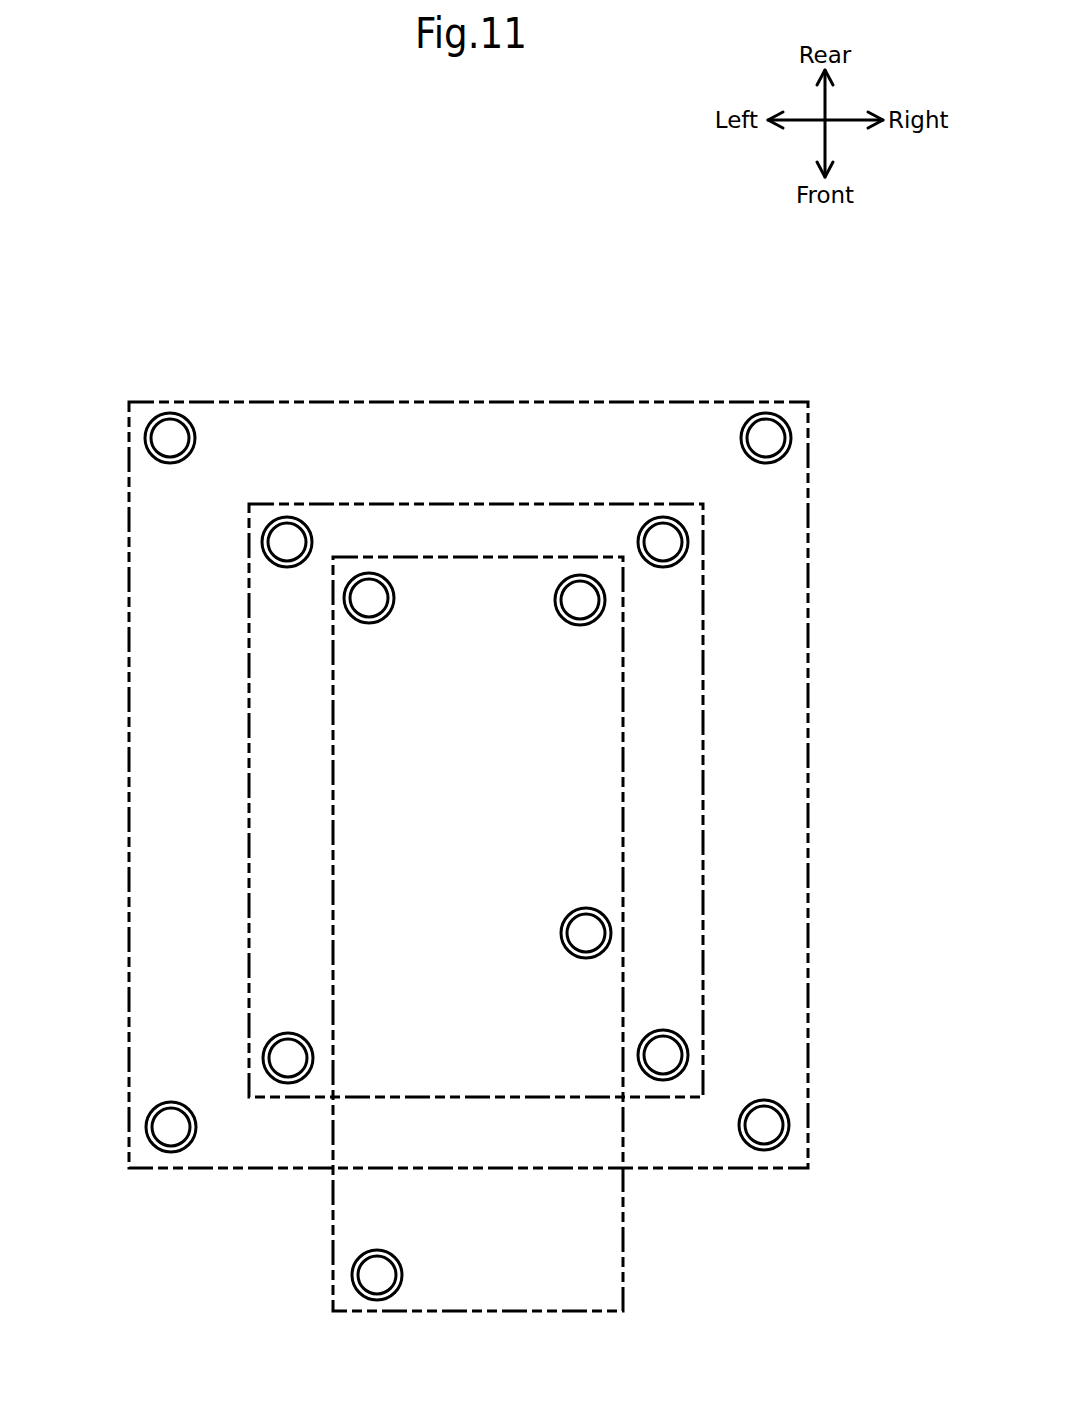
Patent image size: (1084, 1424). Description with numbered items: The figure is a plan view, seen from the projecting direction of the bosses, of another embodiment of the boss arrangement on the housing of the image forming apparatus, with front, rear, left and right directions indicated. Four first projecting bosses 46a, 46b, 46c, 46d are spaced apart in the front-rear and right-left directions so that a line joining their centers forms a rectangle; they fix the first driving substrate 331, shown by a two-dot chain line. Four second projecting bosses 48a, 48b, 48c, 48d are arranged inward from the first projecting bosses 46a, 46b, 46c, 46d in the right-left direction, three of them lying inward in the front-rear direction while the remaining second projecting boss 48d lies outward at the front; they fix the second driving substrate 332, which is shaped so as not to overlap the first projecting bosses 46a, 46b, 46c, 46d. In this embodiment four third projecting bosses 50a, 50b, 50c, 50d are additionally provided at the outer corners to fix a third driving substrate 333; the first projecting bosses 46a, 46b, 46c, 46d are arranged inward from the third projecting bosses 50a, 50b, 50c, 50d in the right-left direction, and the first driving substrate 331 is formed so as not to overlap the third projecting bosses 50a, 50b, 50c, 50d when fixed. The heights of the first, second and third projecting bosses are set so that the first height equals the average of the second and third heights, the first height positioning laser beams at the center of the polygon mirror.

The third driving substrate 333 is at (808, 563).
The first driving substrate 331 is at (703, 682).
The second driving substrate 332 is at (623, 775).
The third projecting boss 50a is at (145, 438).
The third projecting boss 50b is at (791, 438).
The third projecting boss 50c is at (790, 1125).
The third projecting boss 50d is at (146, 1127).
The first projecting boss 46a is at (262, 542).
The first projecting boss 46b is at (689, 542).
The first projecting boss 46c is at (690, 1055).
The first projecting boss 46d is at (263, 1058).
The second projecting boss 48a is at (344, 598).
The second projecting boss 48b is at (606, 600).
The second projecting boss 48c is at (612, 931).
The second projecting boss 48d is at (352, 1275).